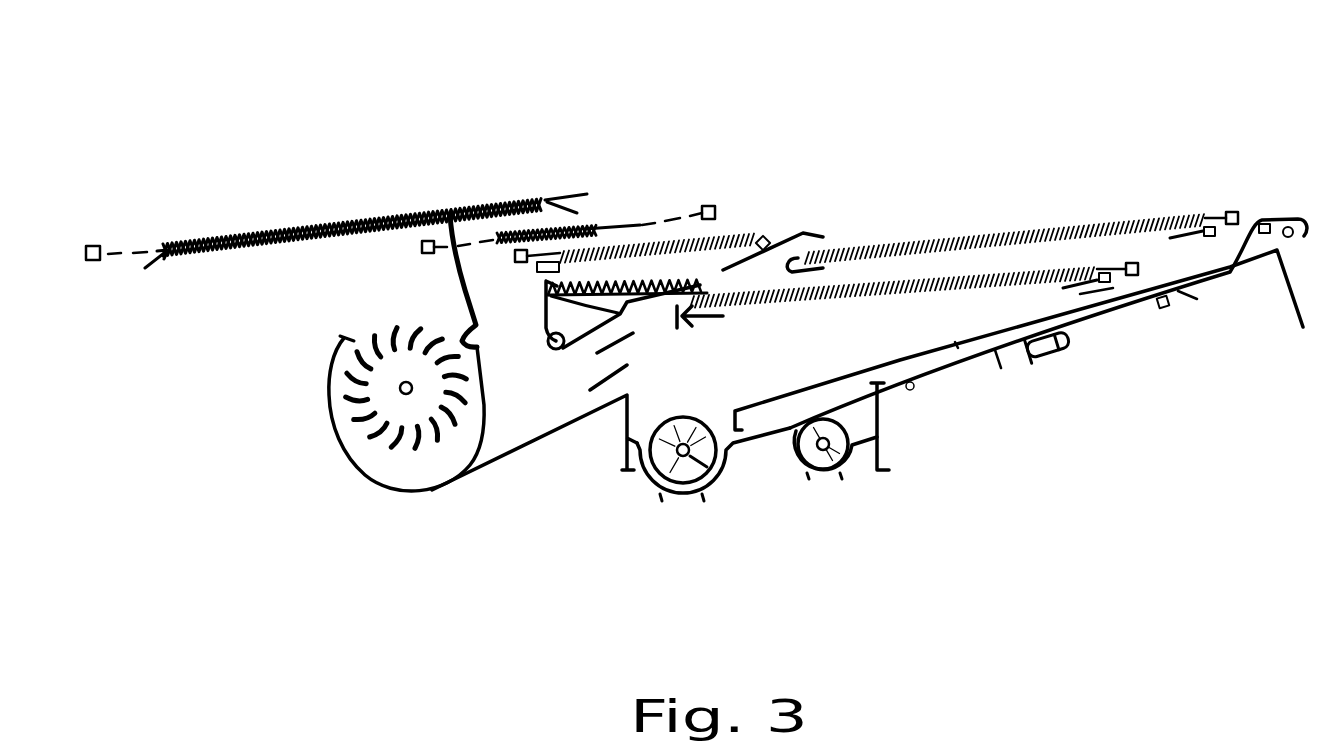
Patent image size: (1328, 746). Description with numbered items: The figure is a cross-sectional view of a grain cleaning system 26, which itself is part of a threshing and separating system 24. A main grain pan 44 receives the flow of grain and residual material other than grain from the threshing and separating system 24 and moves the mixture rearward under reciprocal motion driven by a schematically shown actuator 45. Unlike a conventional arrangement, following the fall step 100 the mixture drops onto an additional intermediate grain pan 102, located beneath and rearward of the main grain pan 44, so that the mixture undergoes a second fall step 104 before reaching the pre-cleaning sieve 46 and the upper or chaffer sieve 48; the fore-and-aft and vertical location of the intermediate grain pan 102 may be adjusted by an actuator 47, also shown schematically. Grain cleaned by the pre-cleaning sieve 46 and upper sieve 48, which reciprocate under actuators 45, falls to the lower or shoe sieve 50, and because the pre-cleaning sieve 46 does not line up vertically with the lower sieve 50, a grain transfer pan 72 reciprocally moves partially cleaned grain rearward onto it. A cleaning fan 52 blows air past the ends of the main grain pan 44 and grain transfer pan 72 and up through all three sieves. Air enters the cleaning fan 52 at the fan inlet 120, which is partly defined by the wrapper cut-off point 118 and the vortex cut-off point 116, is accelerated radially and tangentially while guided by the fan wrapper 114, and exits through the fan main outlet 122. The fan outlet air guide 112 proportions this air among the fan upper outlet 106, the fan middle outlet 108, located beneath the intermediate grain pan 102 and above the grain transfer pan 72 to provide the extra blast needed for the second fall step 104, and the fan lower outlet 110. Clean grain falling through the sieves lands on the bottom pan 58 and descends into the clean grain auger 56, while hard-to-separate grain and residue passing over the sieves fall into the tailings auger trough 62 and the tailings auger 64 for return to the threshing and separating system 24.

The threshing and separating system 24 is at (747, 58).
The grain cleaning system 26 is at (821, 116).
The main grain pan 44 is at (277, 236).
The actuator 45 is at (86, 248).
The pre-cleaning sieve 46 is at (722, 244).
The actuator 47 is at (716, 212).
The upper sieve 48 is at (1033, 233).
The lower sieve 50 is at (940, 285).
The cleaning fan 52 is at (358, 350).
The clean grain auger 56 is at (687, 480).
The bottom pan 58 is at (927, 357).
The tailings auger trough 62 is at (980, 363).
The tailings auger 64 is at (823, 469).
The grain transfer pan 72 is at (684, 287).
The fall step 100 is at (547, 200).
The intermediate grain pan 102 is at (600, 229).
The second fall step 104 is at (630, 229).
The fan upper outlet 106 is at (450, 215).
The fan middle outlet 108 is at (522, 289).
The fan lower outlet 110 is at (560, 380).
The fan outlet air guide 112 is at (450, 277).
The fan wrapper 114 is at (330, 441).
The vortex cut-off point 116 is at (482, 378).
The wrapper cut-off point 118 is at (345, 338).
The fan inlet 120 is at (396, 316).
The fan main outlet 122 is at (490, 420).